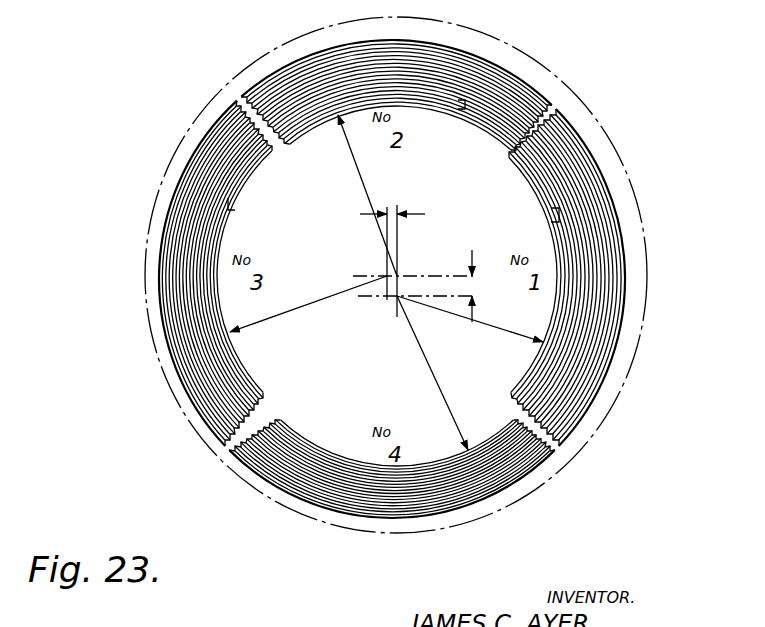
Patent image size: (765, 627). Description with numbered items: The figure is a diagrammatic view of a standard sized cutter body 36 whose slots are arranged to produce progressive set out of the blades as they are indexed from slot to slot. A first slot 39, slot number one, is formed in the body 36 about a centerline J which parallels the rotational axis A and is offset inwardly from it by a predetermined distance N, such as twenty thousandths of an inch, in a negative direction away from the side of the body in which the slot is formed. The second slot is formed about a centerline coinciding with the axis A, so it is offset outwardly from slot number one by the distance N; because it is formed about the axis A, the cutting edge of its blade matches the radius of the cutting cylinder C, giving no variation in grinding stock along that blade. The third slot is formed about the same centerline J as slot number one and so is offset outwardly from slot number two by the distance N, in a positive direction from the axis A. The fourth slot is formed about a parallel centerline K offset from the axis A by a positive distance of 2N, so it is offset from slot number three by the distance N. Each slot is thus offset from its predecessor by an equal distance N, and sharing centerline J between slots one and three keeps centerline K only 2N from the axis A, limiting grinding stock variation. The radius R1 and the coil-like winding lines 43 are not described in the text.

The coil winding 43 is at (145, 0).
The standard sized cutter body 36 is at (548, 122).
The first slot 39 is at (458, 105).
The cutting cylinder C is at (641, 218).
The predetermined distance N is at (398, 206).
The distance 2N is at (474, 304).
The rotational axis A is at (398, 275).
The centerline J is at (386, 276).
The centerline K is at (396, 297).
The radius R1 is at (318, 302).